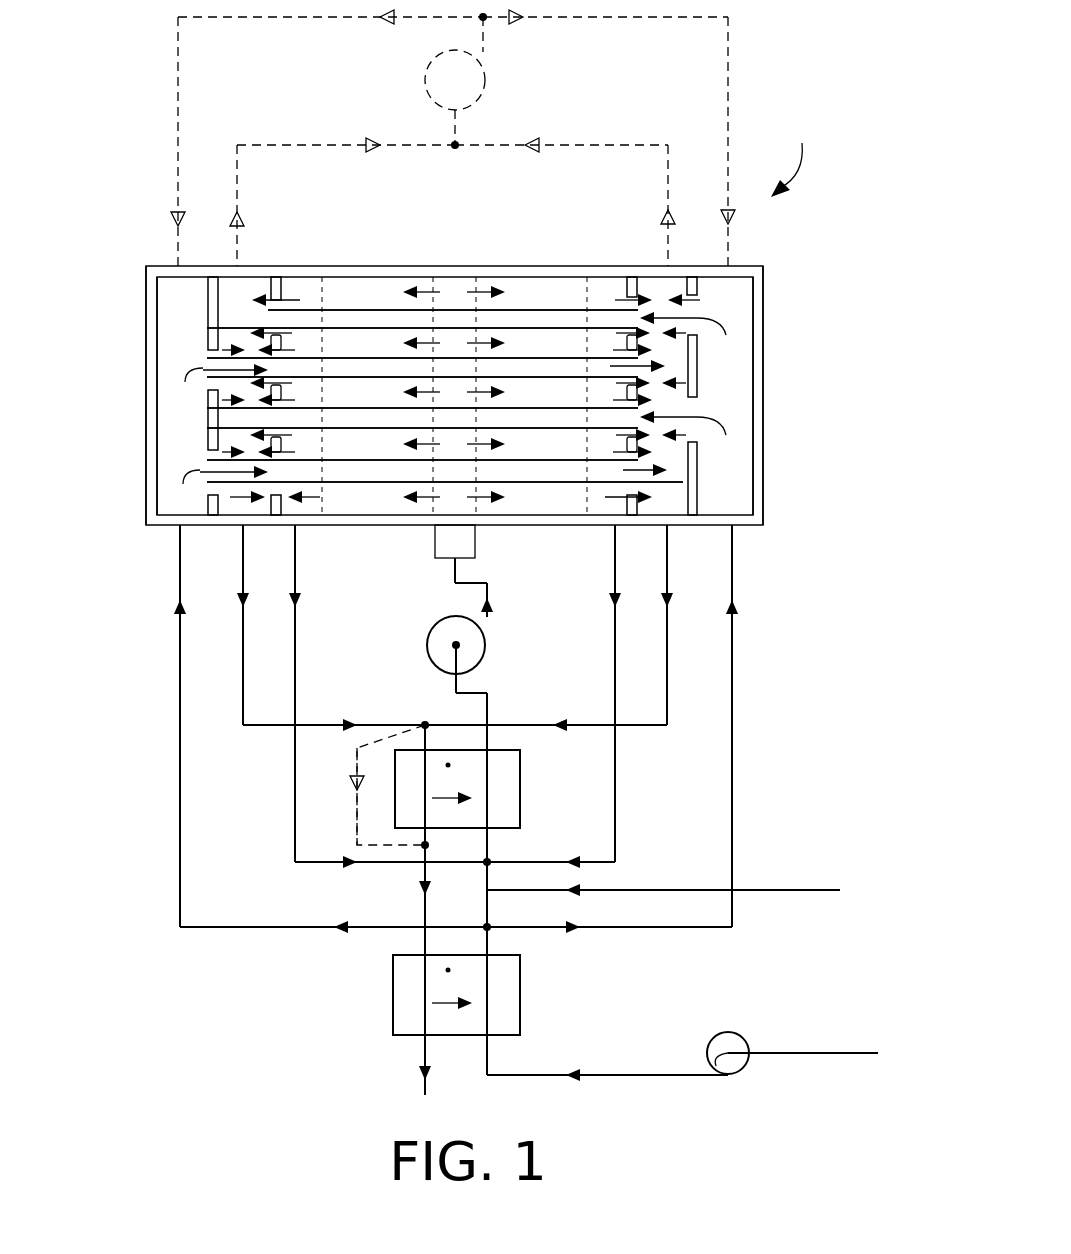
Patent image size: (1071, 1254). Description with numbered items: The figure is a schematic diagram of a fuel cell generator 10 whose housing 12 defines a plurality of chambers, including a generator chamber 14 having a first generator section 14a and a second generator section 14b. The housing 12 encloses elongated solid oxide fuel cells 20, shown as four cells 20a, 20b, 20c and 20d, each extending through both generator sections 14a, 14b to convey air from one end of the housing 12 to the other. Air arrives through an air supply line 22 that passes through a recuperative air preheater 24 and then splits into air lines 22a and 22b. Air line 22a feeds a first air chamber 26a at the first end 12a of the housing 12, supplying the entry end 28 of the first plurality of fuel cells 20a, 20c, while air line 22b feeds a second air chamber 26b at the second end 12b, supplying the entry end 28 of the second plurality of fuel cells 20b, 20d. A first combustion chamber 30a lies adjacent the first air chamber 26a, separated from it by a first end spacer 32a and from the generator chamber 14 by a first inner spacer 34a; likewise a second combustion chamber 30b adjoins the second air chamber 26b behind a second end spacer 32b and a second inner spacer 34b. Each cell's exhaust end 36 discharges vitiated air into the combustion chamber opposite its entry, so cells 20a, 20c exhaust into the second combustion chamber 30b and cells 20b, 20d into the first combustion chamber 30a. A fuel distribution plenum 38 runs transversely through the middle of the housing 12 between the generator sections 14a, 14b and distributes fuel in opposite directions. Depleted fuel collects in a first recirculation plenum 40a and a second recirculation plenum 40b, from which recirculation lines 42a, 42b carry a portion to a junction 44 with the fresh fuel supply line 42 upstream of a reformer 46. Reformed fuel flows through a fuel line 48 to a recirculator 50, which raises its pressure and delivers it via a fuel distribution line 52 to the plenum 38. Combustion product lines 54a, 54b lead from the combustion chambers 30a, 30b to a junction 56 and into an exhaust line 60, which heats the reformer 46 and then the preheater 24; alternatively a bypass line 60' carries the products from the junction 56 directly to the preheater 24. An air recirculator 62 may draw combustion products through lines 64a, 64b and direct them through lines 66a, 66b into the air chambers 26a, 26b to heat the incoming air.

The fuel cell generator 10 is at (793, 150).
The housing 12 is at (116, 262).
The first end of housing 12a is at (765, 268).
The second end of housing 12b is at (143, 287).
The generator chamber 14 is at (333, 282).
The first generator section 14a is at (545, 288).
The second generator section 14b is at (350, 280).
The elongated fuel cells 20 is at (372, 496).
The first plurality fuel cell 20a is at (385, 280).
The second plurality fuel cell 20b is at (555, 357).
The first plurality fuel cell 20c is at (525, 427).
The second plurality fuel cell 20d is at (527, 520).
The air supply line 22 is at (815, 1050).
The first air line 22a is at (735, 723).
The second air line 22b is at (180, 733).
The recuperative air preheater 24 is at (522, 995).
The first air chamber 26a is at (740, 350).
The second air chamber 26b is at (172, 442).
The entry end 28 is at (208, 365).
The first combustion chamber 30a is at (698, 445).
The second combustion chamber 30b is at (235, 428).
The first end spacer 32a is at (697, 350).
The second end spacer 32b is at (207, 402).
The first inner spacer 34a is at (640, 278).
The second inner spacer 34b is at (267, 502).
The exhaust end 36 is at (273, 318).
The fuel distribution plenum 38 is at (455, 288).
The first recirculation plenum 40a is at (607, 277).
The second recirculation plenum 40b is at (297, 278).
The fresh fuel supply line 42 is at (785, 888).
The first recirculation line 42a is at (617, 655).
The second recirculation line 42b is at (295, 622).
The junction 44 is at (520, 843).
The reformer 46 is at (520, 762).
The fuel line 48 is at (488, 737).
The recirculator 50 is at (428, 640).
The fuel distribution line 52 is at (475, 582).
The first combustion product line 54a is at (642, 725).
The second combustion product line 54b is at (270, 727).
The junction 56 is at (425, 722).
The exhaust line 60 is at (389, 816).
The bypass line 60' is at (305, 821).
The air recirculator 62 is at (490, 90).
The first combustion product extraction line 64a is at (637, 143).
The second combustion product extraction line 64b is at (270, 145).
The first heating line 66a is at (735, 40).
The second heating line 66b is at (172, 40).